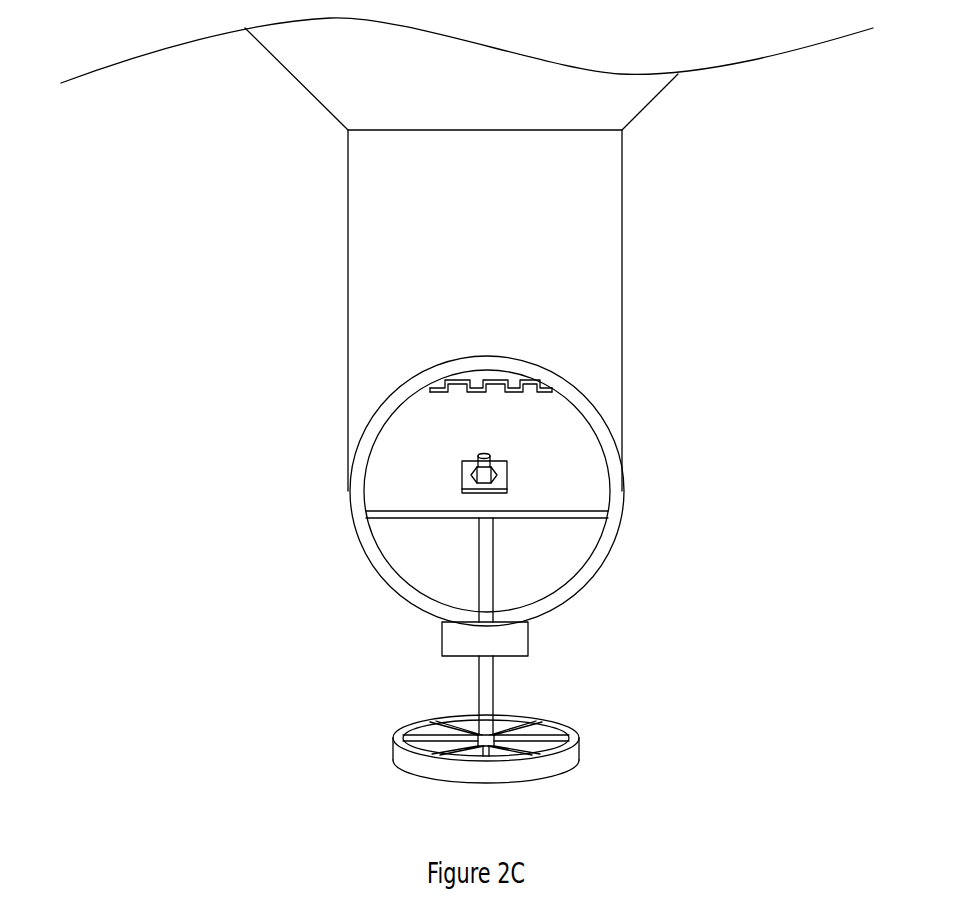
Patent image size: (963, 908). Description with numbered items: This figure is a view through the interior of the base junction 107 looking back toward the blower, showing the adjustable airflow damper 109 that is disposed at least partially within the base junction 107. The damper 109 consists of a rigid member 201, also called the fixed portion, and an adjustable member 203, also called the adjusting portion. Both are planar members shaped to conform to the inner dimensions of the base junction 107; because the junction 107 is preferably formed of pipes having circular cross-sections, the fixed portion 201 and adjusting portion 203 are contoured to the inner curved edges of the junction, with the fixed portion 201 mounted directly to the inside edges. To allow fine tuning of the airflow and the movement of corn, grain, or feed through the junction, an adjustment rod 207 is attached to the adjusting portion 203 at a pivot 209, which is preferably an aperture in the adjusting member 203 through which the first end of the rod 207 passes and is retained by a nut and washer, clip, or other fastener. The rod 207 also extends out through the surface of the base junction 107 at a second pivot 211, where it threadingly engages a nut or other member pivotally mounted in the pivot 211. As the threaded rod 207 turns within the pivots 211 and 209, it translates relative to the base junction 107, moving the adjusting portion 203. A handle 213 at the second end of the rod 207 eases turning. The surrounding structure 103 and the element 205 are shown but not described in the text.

The vehicle body / mounting surface 103 is at (466, 98).
The base junction 107 is at (585, 194).
The airflow damper 109 is at (312, 392).
The rigid member 201 is at (483, 380).
The adjustable member 203 is at (387, 462).
The housing ring 205 is at (510, 384).
The adjustment rod 207 is at (487, 574).
The pivot 209 is at (500, 482).
The pivot 211 is at (462, 636).
The handle 213 is at (550, 770).